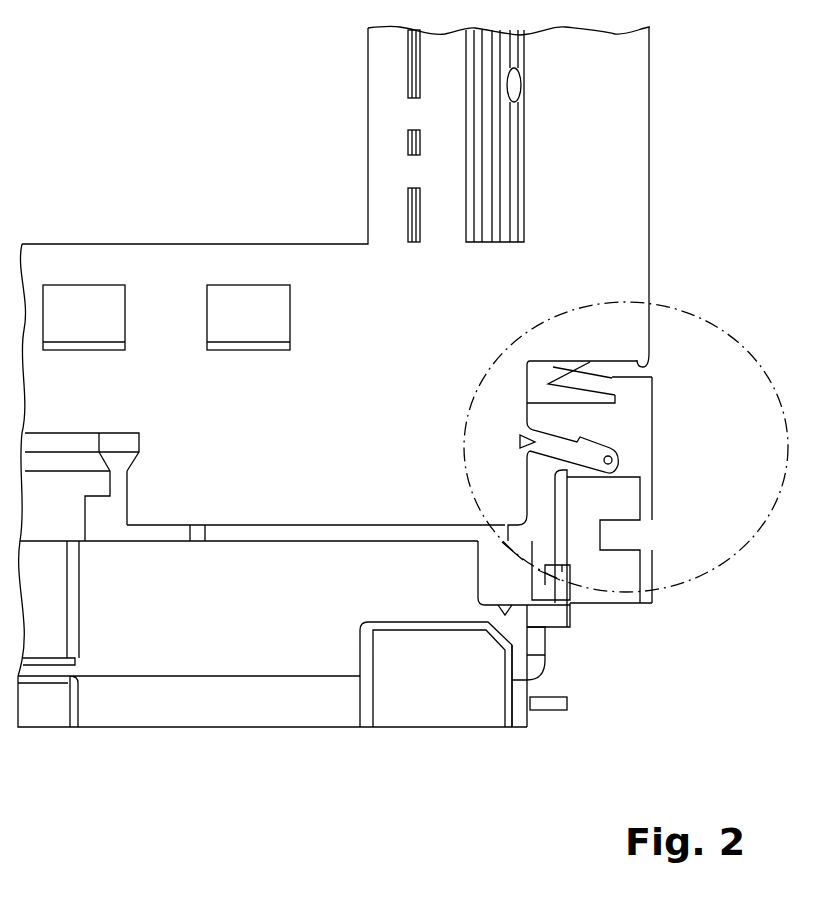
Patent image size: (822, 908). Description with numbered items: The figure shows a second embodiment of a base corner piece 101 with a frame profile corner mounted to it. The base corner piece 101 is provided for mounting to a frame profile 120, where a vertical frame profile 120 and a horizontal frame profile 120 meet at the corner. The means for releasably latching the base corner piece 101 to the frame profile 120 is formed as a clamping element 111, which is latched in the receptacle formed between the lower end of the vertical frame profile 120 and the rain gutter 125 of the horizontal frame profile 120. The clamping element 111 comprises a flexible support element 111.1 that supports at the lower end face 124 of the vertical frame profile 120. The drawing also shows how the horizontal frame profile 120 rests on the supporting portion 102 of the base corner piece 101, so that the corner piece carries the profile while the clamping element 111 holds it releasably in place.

The frame profile 120 is at (66, 278).
The base corner piece 101 is at (148, 700).
The supporting portion 102 is at (252, 531).
The clamping element 111 is at (633, 402).
The flexible support element 111.1 is at (612, 380).
The lower end face 124 is at (652, 364).
The rain gutter 125 is at (620, 458).